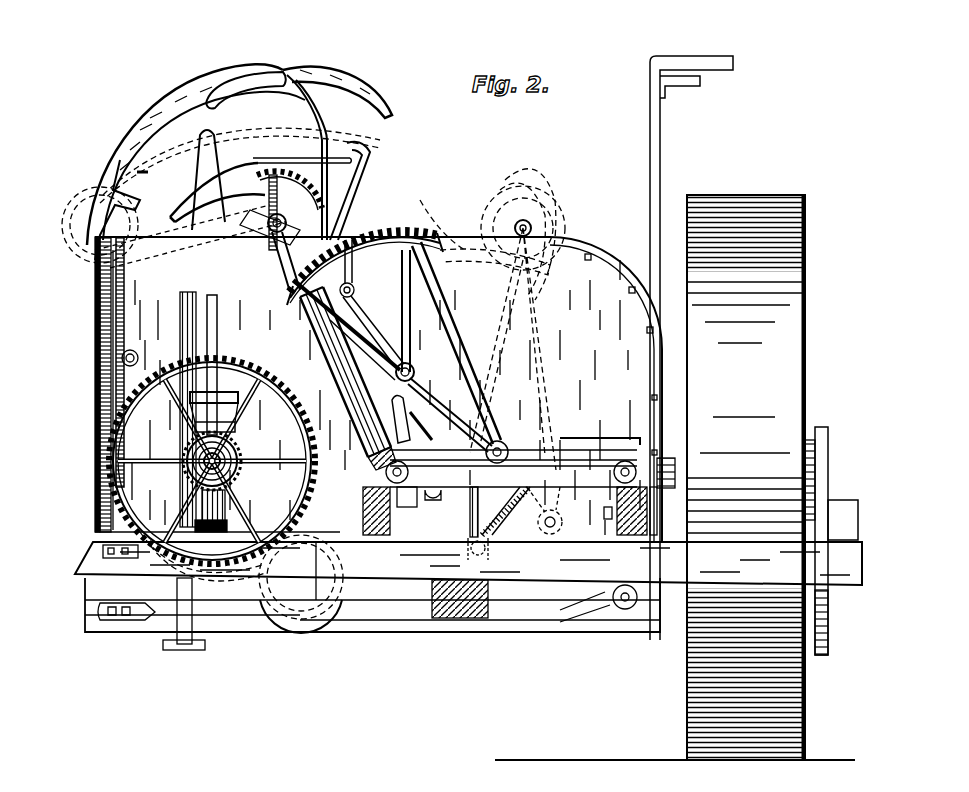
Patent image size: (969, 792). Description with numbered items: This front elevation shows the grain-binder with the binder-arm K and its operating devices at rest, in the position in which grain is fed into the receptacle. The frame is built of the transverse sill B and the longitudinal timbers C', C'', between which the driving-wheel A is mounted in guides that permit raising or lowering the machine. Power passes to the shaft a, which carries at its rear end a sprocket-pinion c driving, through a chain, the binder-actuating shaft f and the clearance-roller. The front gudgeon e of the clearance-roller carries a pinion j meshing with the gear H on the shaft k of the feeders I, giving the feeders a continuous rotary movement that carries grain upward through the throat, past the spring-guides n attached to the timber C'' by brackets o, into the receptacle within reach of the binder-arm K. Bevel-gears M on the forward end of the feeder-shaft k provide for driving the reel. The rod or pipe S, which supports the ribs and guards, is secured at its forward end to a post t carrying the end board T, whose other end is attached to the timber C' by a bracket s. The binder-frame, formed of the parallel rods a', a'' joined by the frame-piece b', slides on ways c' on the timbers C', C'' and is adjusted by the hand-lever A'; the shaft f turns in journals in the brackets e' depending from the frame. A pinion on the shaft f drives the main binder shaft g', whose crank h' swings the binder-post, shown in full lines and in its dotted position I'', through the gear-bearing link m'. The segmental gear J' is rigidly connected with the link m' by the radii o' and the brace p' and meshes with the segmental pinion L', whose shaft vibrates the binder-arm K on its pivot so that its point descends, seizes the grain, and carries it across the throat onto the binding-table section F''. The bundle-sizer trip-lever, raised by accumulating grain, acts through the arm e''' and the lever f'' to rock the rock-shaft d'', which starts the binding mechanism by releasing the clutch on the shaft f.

The driving-wheel A is at (746, 477).
The hand-lever A' is at (691, 334).
The transverse sill B is at (468, 563).
The longitudinal timber C' is at (728, 541).
The longitudinal timber C'' is at (390, 511).
The gear H is at (315, 432).
The feeder I is at (348, 378).
The swinging binder-post (dotted-line position) I'' is at (479, 349).
The segmental gear J' is at (365, 268).
The binder-arm K is at (227, 153).
The segmental pinion L' is at (270, 211).
The bevel-gears M is at (217, 412).
The rod or pipe S is at (132, 347).
The end board T is at (378, 389).
The binding-table section F'' is at (515, 453).
The shaft a is at (599, 610).
The rod of binder-frame a' is at (646, 474).
The rod of binder-frame a'' is at (376, 475).
The frame-piece b' is at (465, 512).
The sprocket-pinion c is at (616, 514).
The ways c' is at (522, 510).
The rock-shaft d'' is at (436, 508).
The front gudgeon e is at (241, 582).
The bracket e' is at (506, 511).
The arm e''' is at (372, 317).
The binder-actuating shaft f is at (483, 551).
The lever f'' is at (370, 368).
The main shaft of the binder g' is at (550, 510).
The crank h' is at (428, 426).
The pinion j is at (313, 571).
The feeder-shaft k is at (226, 468).
The gear-bearing link m' is at (458, 420).
The spring-guide n is at (394, 376).
The bracket o is at (348, 326).
The radii o' is at (372, 264).
The brace p' is at (492, 239).
The bracket s is at (666, 459).
The post t is at (110, 390).